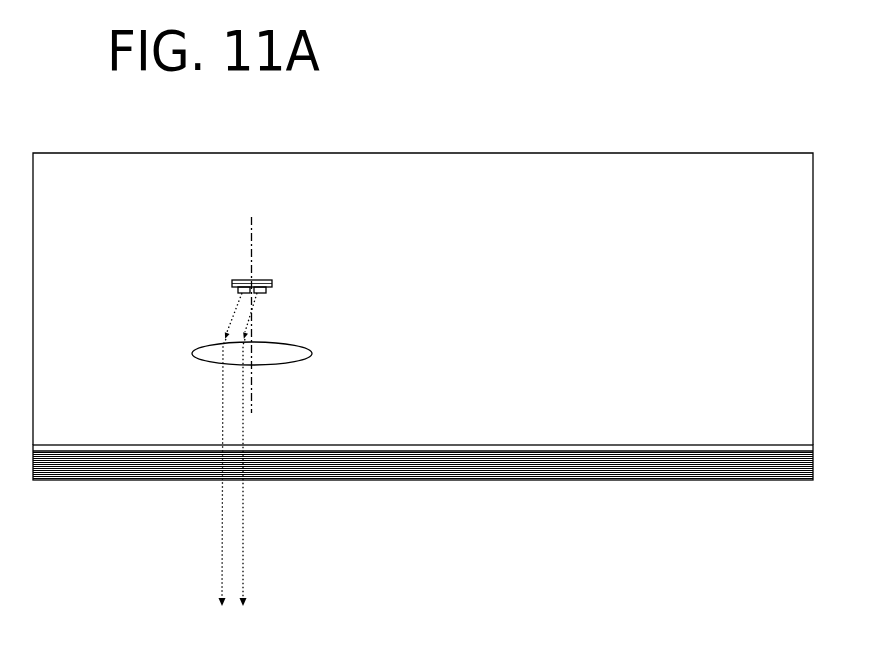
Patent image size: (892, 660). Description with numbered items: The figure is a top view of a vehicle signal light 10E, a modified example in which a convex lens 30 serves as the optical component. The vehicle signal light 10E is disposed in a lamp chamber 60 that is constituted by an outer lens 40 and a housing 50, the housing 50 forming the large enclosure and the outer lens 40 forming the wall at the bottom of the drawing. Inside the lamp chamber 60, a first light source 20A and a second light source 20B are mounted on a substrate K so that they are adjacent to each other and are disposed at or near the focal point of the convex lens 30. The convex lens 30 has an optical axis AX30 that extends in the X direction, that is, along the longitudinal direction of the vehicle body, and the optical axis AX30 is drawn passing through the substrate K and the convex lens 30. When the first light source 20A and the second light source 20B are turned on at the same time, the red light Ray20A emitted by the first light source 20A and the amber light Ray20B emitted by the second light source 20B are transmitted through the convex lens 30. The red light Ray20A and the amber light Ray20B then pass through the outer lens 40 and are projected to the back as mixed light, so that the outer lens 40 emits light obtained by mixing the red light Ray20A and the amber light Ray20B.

The vehicle signal light 10E is at (411, 50).
The housing 50 is at (476, 152).
The lamp chamber 60 is at (574, 204).
The outer lens 40 is at (702, 481).
The optical axis AX30 is at (250, 228).
The substrate K is at (262, 279).
The first light source 20A is at (263, 292).
The second light source 20B is at (243, 292).
The convex lens 30 is at (288, 366).
The red light Ray20A is at (246, 545).
The amber light Ray20B is at (219, 523).